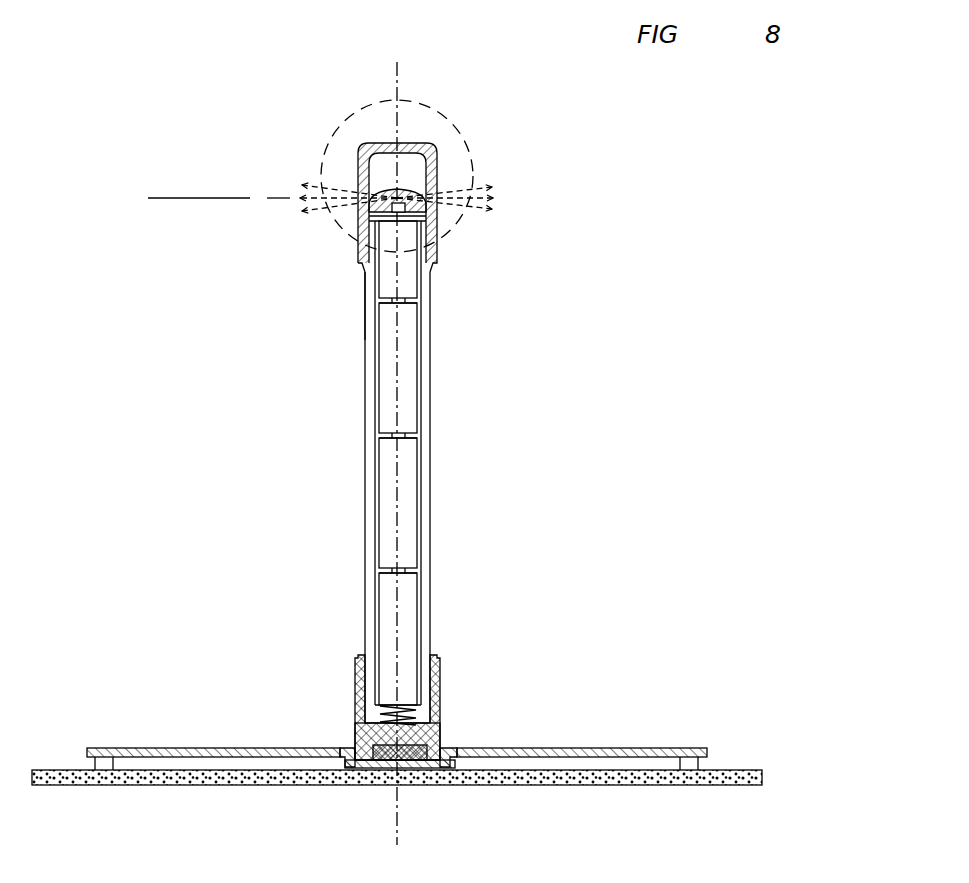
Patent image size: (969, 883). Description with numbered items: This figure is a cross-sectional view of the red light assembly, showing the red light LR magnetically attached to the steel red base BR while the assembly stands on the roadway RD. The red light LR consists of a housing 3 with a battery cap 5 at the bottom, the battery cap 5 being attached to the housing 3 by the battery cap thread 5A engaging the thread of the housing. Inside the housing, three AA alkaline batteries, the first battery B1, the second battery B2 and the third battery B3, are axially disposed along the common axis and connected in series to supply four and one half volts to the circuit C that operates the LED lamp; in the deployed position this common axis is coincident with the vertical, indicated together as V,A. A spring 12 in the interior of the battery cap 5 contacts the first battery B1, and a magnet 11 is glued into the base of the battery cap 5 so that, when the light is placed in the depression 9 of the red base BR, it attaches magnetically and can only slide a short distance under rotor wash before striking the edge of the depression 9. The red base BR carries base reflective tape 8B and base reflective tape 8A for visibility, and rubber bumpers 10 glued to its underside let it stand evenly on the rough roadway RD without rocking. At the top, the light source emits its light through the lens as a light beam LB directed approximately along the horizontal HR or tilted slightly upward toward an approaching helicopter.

The vertical and common axis V,A is at (397, 66).
The horizontal HR is at (200, 198).
The light beam LB is at (484, 187).
The circuit C is at (401, 283).
The red light LR is at (372, 309).
The housing 3 is at (368, 478).
The battery 3 B3 is at (397, 394).
The battery 2 B2 is at (393, 493).
The battery 1 B1 is at (403, 597).
The battery cap thread 5A is at (437, 693).
The battery cap 5 is at (440, 710).
The spring 12 is at (437, 733).
The magnet 11 is at (443, 750).
The depression 9 is at (345, 747).
The rubber bumper 10 is at (692, 763).
The base reflective tape 8A is at (625, 746).
The base reflective tape 8B is at (182, 747).
The red base BR is at (113, 748).
The roadway RD is at (523, 775).